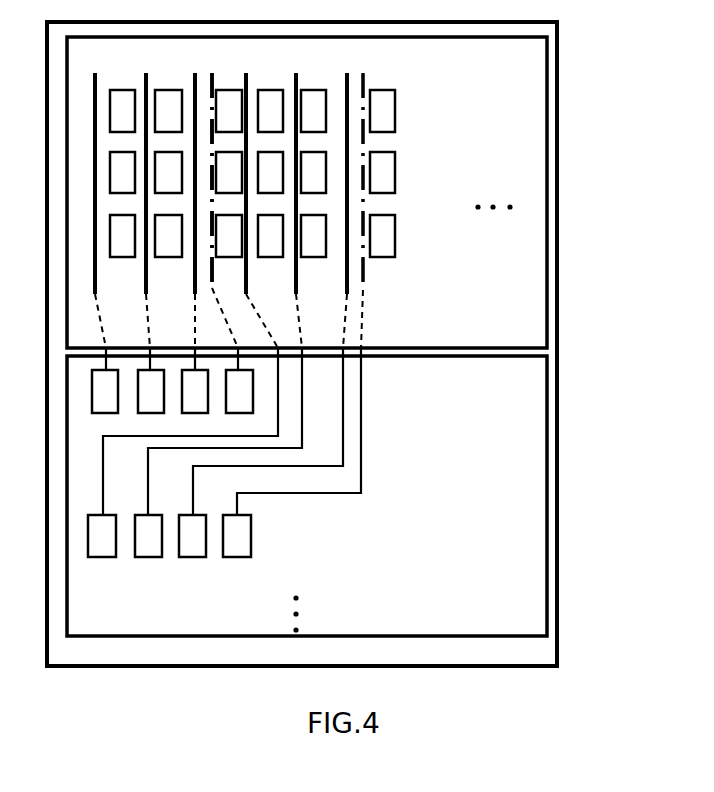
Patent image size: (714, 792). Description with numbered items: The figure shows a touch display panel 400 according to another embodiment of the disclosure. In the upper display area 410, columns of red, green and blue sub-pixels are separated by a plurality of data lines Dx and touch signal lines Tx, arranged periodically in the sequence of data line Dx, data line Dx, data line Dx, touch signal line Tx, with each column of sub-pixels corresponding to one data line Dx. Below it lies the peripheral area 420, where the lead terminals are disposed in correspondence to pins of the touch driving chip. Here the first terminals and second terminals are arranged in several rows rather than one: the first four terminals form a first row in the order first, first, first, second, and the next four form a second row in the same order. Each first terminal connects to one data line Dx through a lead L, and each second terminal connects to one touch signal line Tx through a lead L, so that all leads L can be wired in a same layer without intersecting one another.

The touch display panel 400 is at (466, 22).
The display area 410 is at (547, 115).
The peripheral area 420 is at (346, 492).
The data line Dx is at (95, 73).
The touch signal line Tx is at (212, 73).
The lead L is at (363, 420).